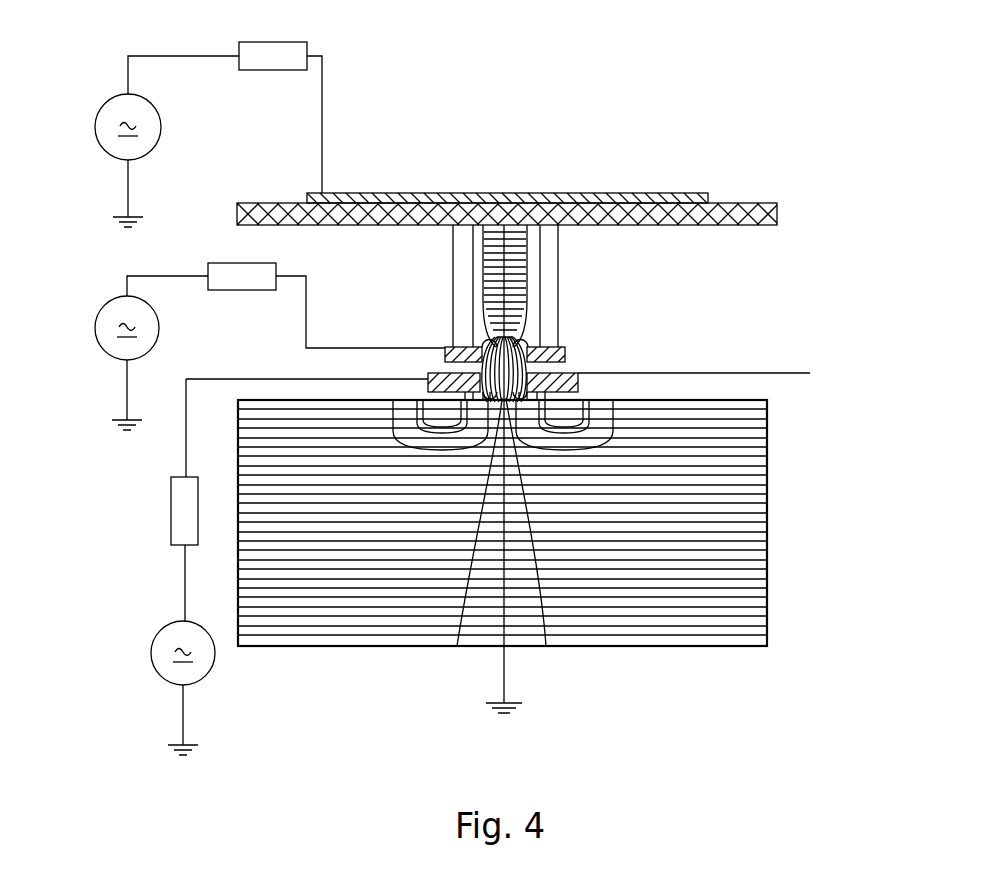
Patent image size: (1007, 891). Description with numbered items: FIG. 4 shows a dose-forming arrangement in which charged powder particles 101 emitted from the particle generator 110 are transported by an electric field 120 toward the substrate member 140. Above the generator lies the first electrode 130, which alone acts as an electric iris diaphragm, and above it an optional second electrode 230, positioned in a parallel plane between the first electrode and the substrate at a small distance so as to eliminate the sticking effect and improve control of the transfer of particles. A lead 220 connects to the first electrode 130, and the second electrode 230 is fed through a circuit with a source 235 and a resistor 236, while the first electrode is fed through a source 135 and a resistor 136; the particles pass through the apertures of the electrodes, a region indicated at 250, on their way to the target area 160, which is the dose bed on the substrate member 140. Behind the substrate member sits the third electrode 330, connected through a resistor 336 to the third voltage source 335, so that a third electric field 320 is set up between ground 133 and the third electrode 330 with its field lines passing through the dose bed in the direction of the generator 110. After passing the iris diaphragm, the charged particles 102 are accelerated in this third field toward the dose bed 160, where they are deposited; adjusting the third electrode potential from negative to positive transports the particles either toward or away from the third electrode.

The charged powder particles 101 is at (703, 505).
The charged particles 102 is at (492, 268).
The particle generator 110 is at (767, 565).
The electric field 120 is at (595, 420).
The first electrode 130 is at (578, 383).
The ground 133 is at (515, 713).
The AC source 135 is at (152, 640).
The resistor 136 is at (170, 508).
The substrate member 140 is at (777, 220).
The target area 160 is at (470, 227).
The lead 220 is at (520, 375).
The second electrode 230 is at (565, 354).
The AC source 235 is at (100, 312).
The resistor 236 is at (238, 292).
The plasma 250 is at (518, 343).
The third electric field 320 is at (530, 275).
The third electrode 330 is at (708, 202).
The third voltage source 335 is at (107, 102).
The resistor 336 is at (280, 43).